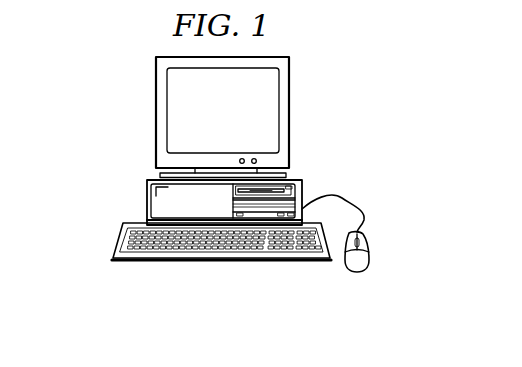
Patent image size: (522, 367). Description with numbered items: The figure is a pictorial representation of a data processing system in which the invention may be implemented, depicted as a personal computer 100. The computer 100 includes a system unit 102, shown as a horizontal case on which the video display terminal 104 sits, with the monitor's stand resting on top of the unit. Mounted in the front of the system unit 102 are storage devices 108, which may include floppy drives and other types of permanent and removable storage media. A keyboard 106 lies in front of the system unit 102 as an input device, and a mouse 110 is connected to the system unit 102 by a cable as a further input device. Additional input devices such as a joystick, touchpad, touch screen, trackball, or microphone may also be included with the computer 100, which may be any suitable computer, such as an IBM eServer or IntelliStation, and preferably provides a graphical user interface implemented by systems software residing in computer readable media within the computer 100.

The computer 100 is at (104, 92).
The system unit 102 is at (147, 201).
The video display terminal 104 is at (289, 113).
The keyboard 106 is at (203, 262).
The storage devices 108 is at (272, 190).
The mouse 110 is at (369, 258).